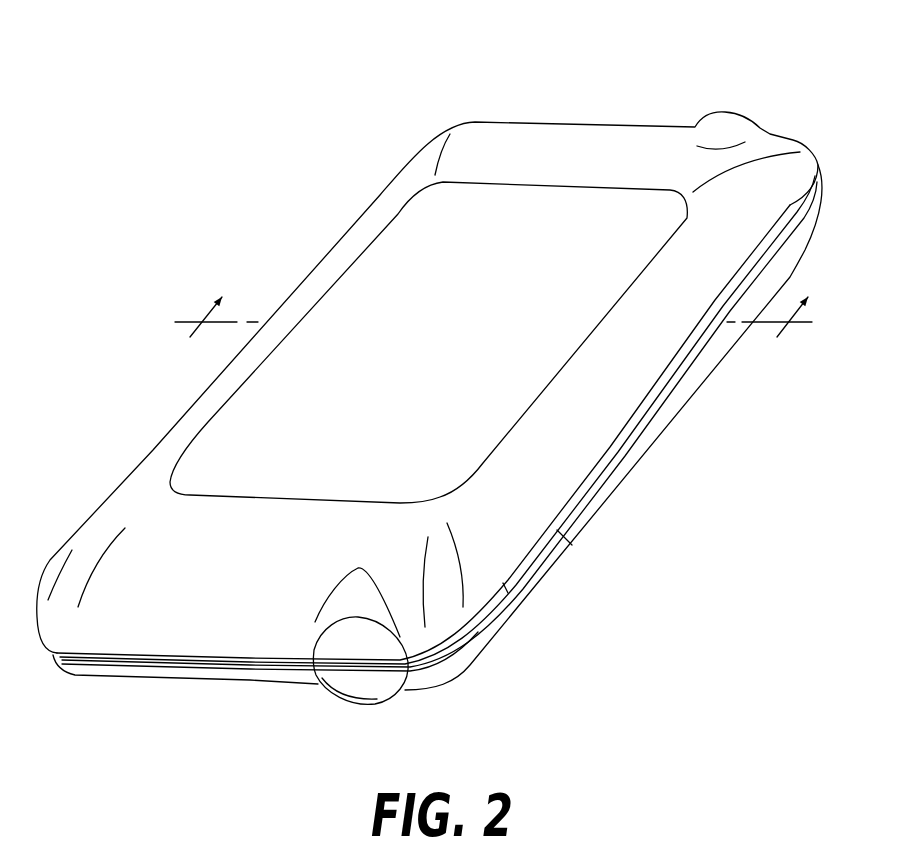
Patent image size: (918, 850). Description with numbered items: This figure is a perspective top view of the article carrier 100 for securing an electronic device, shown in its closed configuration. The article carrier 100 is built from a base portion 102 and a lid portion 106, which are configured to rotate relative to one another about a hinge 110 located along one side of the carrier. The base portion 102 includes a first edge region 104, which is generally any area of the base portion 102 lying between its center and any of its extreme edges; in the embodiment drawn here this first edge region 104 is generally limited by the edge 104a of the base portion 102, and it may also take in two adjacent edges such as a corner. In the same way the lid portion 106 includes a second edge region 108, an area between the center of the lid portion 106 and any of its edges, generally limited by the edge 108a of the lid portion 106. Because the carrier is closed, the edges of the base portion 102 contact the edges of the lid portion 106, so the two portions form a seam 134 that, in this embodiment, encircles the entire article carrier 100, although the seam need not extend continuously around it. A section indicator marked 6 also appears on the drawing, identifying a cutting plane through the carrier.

The article carrier 100 is at (288, 200).
The base portion 102 is at (92, 666).
The first edge region 104 is at (628, 456).
The edge of the base portion 104a is at (570, 543).
The lid portion 106 is at (610, 146).
The second edge region 108 is at (560, 481).
The edge of the lid portion 108a is at (602, 452).
The hinge 110 is at (705, 333).
The seam 134 is at (170, 660).
The section line 6- 6 is at (498, 315).